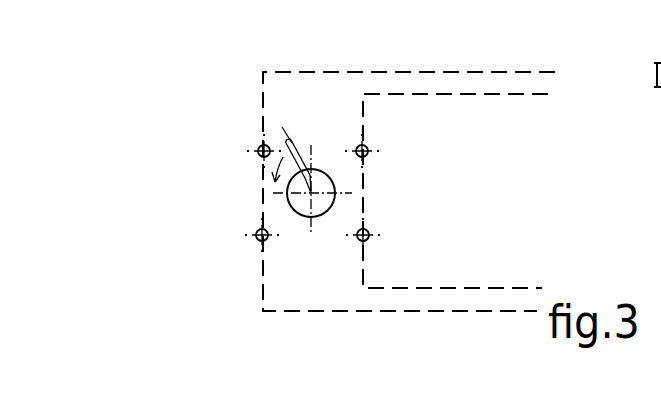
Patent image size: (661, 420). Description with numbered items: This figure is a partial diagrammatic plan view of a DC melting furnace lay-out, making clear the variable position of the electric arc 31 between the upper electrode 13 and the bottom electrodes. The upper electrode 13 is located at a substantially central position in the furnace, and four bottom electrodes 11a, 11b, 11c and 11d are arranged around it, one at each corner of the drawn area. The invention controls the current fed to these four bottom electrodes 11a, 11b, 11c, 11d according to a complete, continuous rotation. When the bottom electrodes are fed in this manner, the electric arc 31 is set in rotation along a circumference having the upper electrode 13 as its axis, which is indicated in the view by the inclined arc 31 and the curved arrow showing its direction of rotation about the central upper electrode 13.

The electric arc 31 is at (312, 187).
The upper electrode 13 is at (315, 195).
The bottom electrode 11a is at (370, 235).
The bottom electrode 11b is at (367, 147).
The bottom electrode 11c is at (257, 147).
The bottom electrode 11d is at (253, 237).